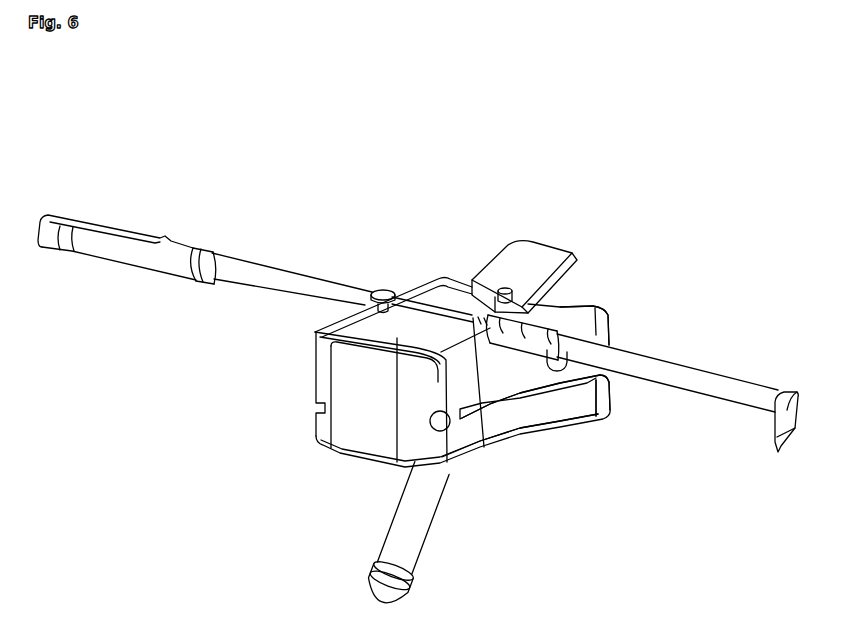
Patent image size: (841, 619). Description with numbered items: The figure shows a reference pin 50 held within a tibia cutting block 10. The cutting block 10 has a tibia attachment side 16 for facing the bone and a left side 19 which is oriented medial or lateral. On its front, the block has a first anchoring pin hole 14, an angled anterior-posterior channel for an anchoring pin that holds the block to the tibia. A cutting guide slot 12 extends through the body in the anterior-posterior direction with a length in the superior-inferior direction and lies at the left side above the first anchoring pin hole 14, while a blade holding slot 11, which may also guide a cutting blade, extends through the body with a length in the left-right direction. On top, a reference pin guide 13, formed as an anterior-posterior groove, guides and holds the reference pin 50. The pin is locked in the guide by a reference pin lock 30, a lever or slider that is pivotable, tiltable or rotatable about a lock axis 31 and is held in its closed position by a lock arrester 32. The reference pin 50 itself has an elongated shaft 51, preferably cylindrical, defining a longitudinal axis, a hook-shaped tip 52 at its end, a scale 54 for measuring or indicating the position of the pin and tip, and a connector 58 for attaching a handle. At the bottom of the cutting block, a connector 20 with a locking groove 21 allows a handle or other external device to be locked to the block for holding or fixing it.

The tibia cutting block 10 is at (478, 212).
The blade holding slot 11 is at (593, 410).
The cutting guide slot 12 is at (437, 362).
The reference pin guide 13 is at (490, 343).
The first anchoring pin hole 14 is at (445, 431).
The tibia attachment side 16 is at (555, 415).
The left side 19 is at (363, 433).
The connector 20 is at (435, 535).
The locking groove 21 is at (403, 578).
The reference pin lock 30 is at (540, 254).
The lock axis 31 is at (500, 288).
The lock arrester 32 is at (384, 290).
The reference pin 50 is at (268, 262).
The elongated shaft 51 is at (728, 384).
The hook-shaped tip 52 is at (789, 445).
The scale 54 is at (560, 318).
The connector 58 is at (115, 232).